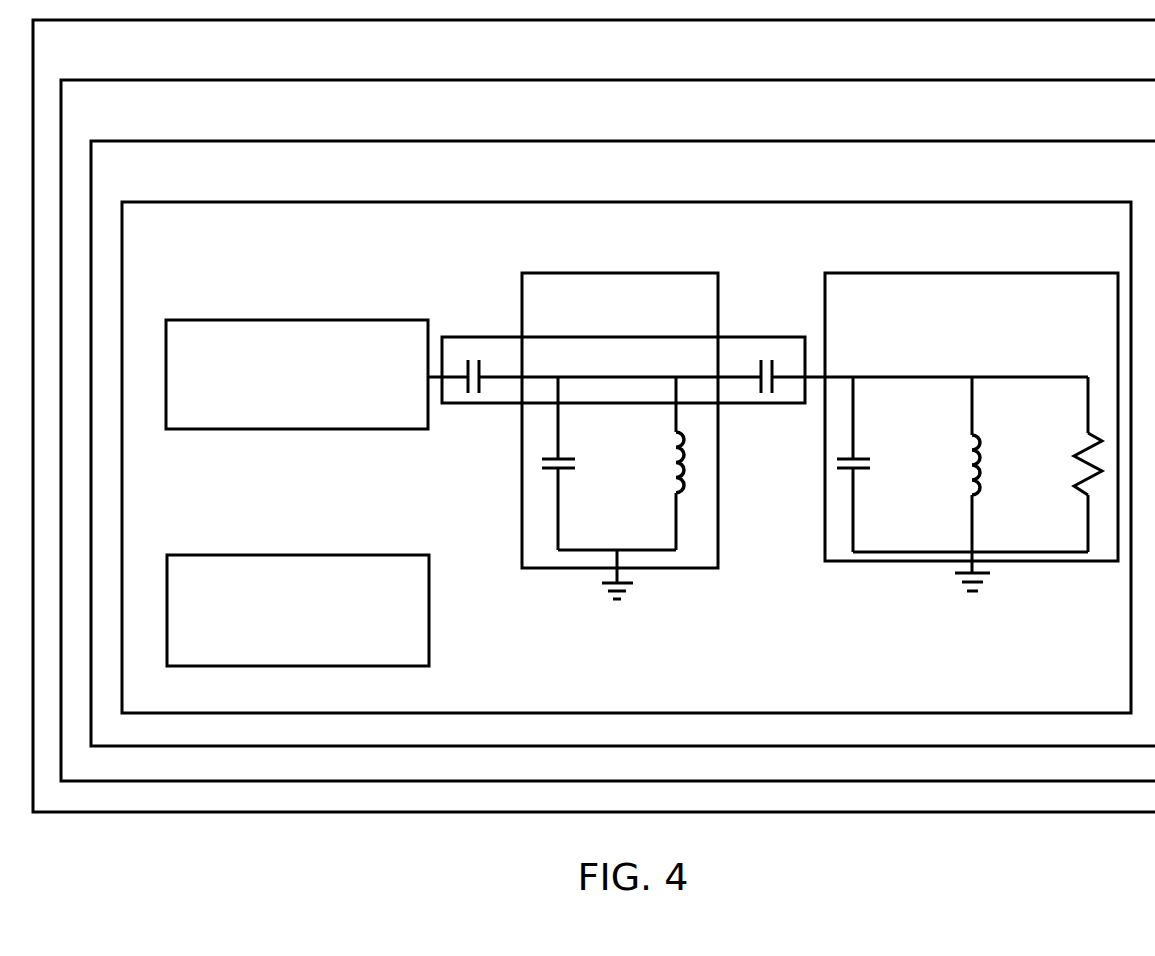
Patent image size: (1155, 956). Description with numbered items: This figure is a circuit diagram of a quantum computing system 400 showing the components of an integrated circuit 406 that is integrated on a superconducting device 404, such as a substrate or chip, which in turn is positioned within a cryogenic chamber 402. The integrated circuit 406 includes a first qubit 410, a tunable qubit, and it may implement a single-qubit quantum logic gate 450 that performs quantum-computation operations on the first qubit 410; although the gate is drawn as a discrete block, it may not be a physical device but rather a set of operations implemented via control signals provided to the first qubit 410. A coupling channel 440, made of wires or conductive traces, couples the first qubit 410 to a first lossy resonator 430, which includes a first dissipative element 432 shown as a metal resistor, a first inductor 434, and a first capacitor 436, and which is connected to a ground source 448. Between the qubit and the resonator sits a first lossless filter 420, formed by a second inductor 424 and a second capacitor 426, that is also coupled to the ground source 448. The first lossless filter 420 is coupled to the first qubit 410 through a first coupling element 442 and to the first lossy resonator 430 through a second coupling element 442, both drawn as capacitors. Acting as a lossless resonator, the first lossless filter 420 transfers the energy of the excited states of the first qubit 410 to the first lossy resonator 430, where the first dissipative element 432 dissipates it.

The quantum computing system 400 is at (608, 74).
The cryogenic chamber 402 is at (608, 134).
The superconducting device 404 is at (608, 196).
The integrated circuit 406 is at (610, 257).
The first qubit 410 is at (278, 399).
The first lossless filter 420 is at (601, 326).
The second inductor 424 is at (682, 497).
The second capacitor 426 is at (551, 476).
The first lossy resonator 430 is at (953, 326).
The first dissipative element 432 is at (1082, 500).
The first inductor 434 is at (959, 465).
The first capacitor 436 is at (836, 468).
The coupling channel 440 is at (488, 335).
The coupling element 442 is at (474, 394).
The ground source 448 is at (610, 606).
The single-qubit quantum logic gate 450 is at (279, 647).